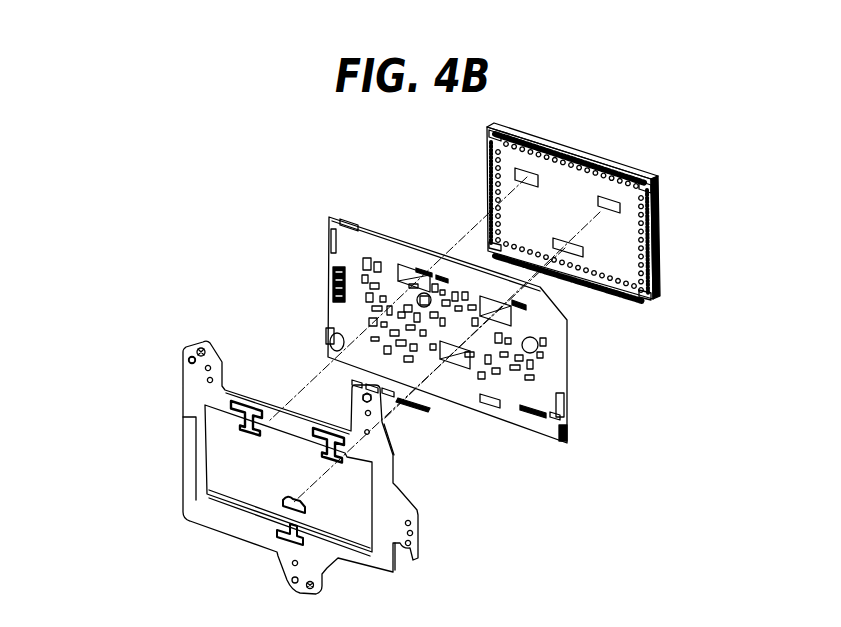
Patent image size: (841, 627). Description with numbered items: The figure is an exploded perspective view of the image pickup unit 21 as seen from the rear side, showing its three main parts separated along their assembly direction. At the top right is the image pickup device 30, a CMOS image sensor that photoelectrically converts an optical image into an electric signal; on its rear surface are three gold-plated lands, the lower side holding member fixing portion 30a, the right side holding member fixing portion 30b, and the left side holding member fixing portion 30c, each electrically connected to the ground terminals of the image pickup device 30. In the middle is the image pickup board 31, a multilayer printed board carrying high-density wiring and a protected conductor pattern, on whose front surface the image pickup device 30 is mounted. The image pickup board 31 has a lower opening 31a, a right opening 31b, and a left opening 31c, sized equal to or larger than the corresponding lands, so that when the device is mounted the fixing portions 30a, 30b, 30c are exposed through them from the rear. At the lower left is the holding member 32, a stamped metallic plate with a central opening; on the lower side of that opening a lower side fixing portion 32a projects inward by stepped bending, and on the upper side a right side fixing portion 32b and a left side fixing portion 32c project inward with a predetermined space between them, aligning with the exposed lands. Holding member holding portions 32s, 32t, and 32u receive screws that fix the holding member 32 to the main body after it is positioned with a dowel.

The image pickup unit 21 is at (291, 183).
The image pickup device 30 is at (486, 133).
The lower side holding member fixing portion 30a is at (587, 288).
The right side holding member fixing portion 30b is at (614, 192).
The left side holding member fixing portion 30c is at (531, 166).
The image pickup board 31 is at (329, 253).
The lower opening 31a is at (453, 372).
The right opening 31b is at (520, 316).
The left opening 31c is at (412, 263).
The holding member 32 is at (257, 526).
The lower side fixing portion 32a is at (305, 507).
The right side fixing portion 32b is at (347, 464).
The left side fixing portion 32c is at (256, 436).
The holding member holding portion 32s is at (318, 587).
The holding member holding portion 32t is at (383, 424).
The holding member holding portion 32u is at (188, 361).